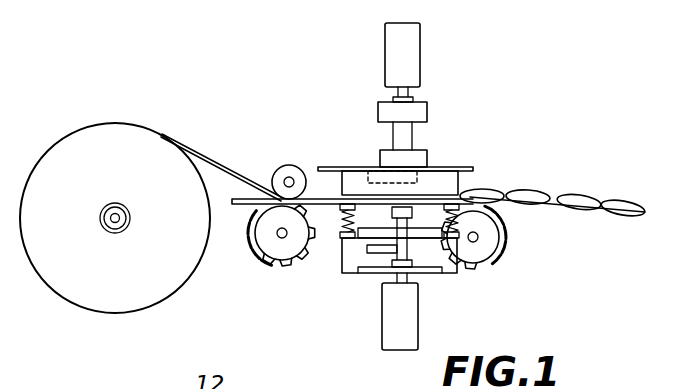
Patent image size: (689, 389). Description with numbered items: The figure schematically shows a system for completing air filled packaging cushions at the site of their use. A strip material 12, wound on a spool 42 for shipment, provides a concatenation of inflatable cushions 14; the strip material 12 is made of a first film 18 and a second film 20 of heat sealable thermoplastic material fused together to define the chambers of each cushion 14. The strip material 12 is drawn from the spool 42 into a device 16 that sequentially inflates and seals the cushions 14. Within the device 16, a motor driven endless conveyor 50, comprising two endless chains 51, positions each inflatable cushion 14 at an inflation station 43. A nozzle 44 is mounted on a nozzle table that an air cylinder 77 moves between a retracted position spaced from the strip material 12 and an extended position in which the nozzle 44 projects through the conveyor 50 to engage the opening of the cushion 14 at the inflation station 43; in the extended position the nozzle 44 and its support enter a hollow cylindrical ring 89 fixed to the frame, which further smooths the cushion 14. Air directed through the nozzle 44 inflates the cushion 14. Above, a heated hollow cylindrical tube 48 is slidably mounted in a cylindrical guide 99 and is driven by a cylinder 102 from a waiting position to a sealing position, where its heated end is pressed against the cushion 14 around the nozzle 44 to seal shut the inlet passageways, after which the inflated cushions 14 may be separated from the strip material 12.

The strip material 12 is at (219, 166).
The inflatable cushion 14 is at (555, 204).
The device 16 is at (407, 106).
The first film 18 is at (625, 214).
The second film 20 is at (627, 202).
The spool 42 is at (105, 229).
The inflation station 43 is at (427, 186).
The nozzle 44 is at (383, 207).
The heated tube 48 is at (422, 165).
The endless conveyor 50 is at (498, 258).
The endless chain 51 is at (506, 245).
The air cylinder 77 is at (413, 325).
The hollow cylindrical ring 89 is at (368, 168).
The cylindrical guide 99 is at (373, 138).
The cylinder 102 is at (422, 34).